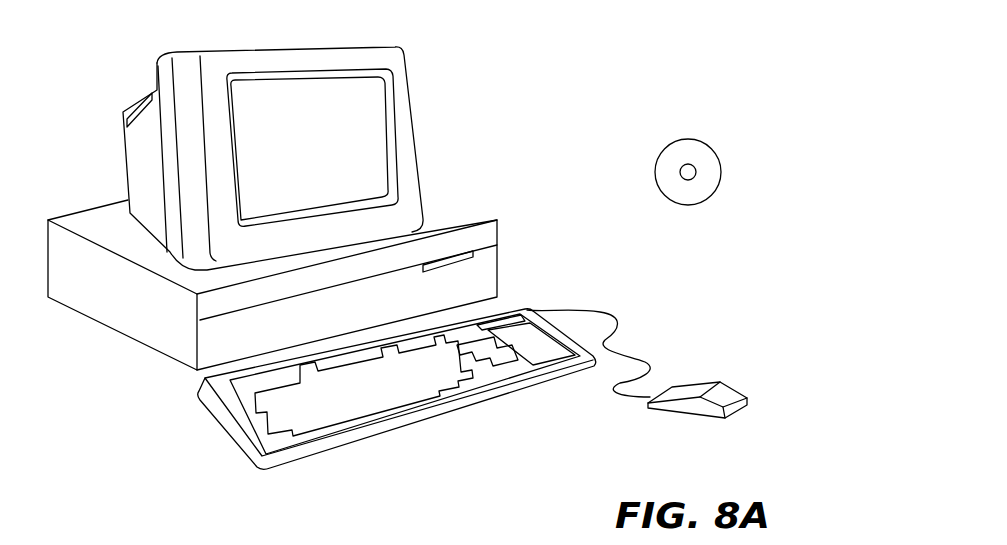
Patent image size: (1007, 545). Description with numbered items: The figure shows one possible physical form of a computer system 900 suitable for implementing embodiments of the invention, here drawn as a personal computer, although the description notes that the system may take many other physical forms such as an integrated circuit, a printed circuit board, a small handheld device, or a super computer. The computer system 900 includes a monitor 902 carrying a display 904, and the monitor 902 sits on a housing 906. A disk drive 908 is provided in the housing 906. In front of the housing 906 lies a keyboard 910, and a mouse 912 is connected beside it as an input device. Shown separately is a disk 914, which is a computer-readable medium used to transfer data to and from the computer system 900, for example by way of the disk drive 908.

The computer system 900 is at (612, 31).
The monitor 902 is at (417, 156).
The display screen 904 is at (377, 110).
The computer housing 906 is at (152, 348).
The disk drive slot 908 is at (472, 250).
The keyboard 910 is at (403, 427).
The mouse 912 is at (723, 383).
The removable disk 914 is at (708, 146).